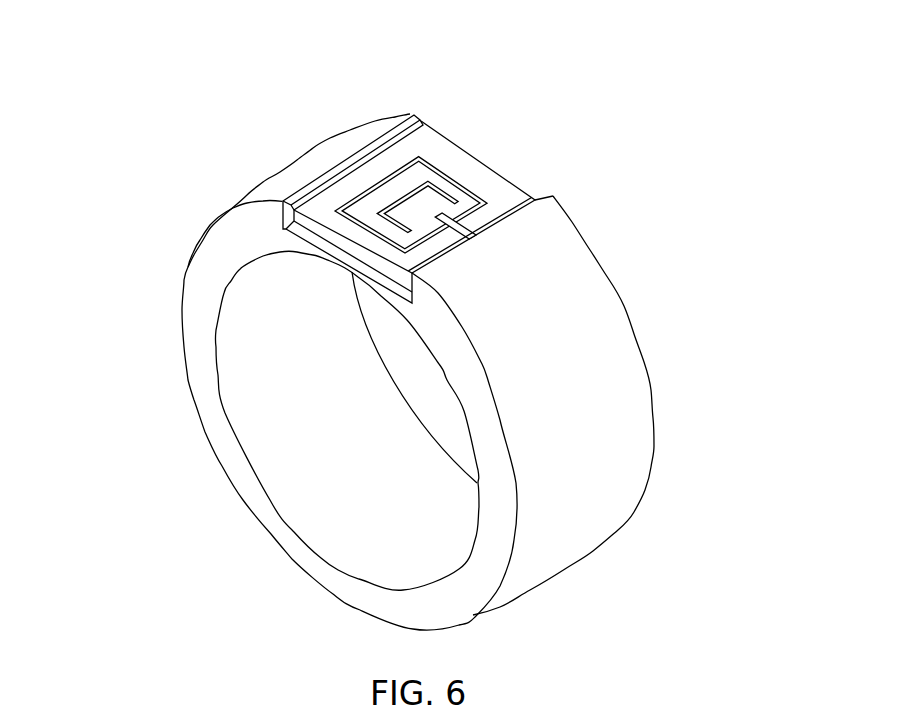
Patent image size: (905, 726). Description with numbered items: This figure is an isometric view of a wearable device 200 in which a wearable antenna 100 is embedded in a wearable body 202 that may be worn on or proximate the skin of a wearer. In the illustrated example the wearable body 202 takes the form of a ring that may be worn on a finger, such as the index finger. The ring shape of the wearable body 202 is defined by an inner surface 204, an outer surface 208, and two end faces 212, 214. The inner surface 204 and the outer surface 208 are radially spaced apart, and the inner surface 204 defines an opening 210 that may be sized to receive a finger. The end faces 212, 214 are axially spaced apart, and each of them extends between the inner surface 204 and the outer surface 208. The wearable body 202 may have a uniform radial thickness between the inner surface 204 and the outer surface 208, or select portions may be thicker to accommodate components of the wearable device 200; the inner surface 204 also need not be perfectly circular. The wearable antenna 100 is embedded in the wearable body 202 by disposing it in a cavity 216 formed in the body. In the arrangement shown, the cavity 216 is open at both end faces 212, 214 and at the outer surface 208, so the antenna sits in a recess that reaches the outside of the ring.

The wearable antenna 100 is at (467, 172).
The wearable device 200 is at (434, 348).
The wearable body 202 is at (473, 364).
The inner surface 204 is at (347, 546).
The outer surface 208 is at (568, 535).
The opening 210 is at (276, 402).
The end face 212 is at (212, 251).
The end face 214 is at (644, 361).
The cavity 216 is at (401, 121).